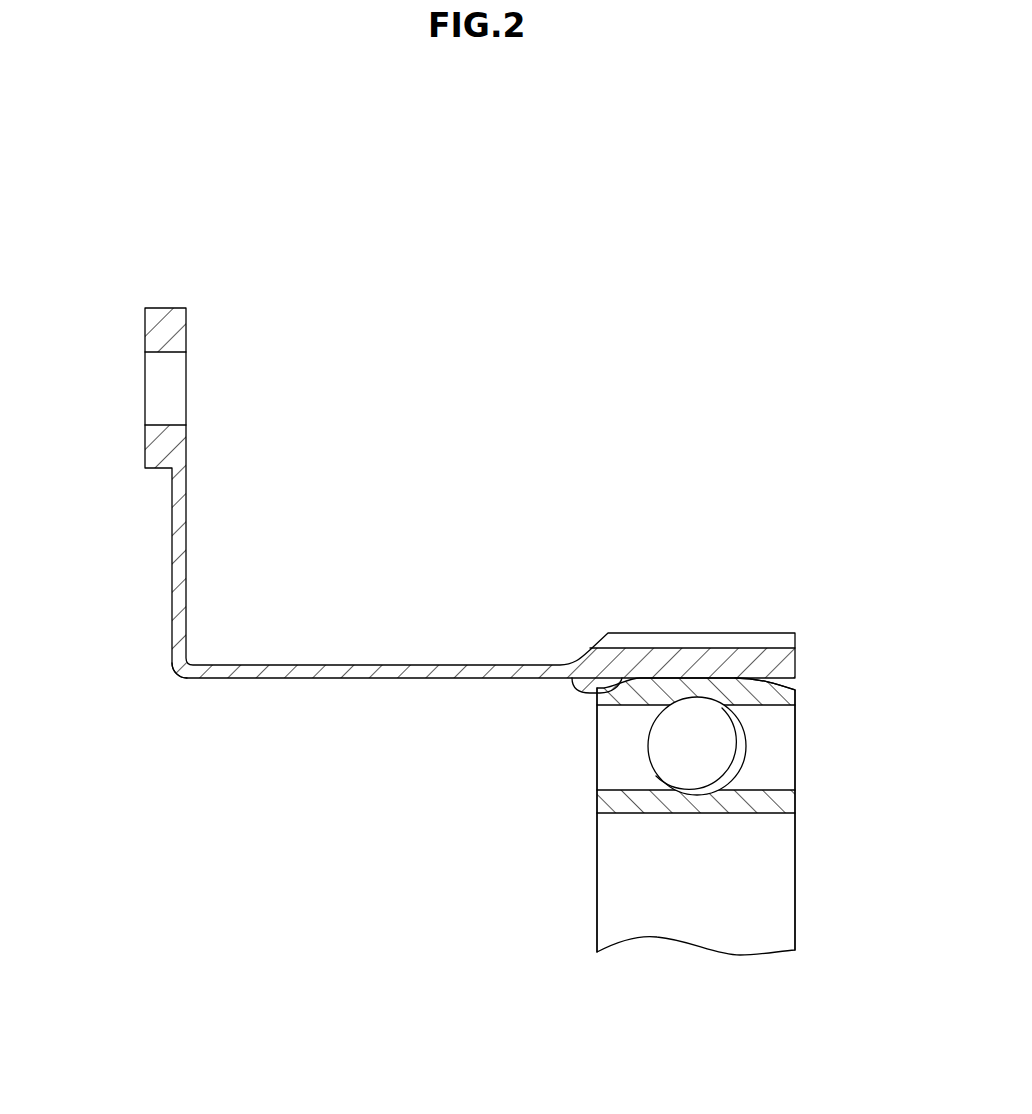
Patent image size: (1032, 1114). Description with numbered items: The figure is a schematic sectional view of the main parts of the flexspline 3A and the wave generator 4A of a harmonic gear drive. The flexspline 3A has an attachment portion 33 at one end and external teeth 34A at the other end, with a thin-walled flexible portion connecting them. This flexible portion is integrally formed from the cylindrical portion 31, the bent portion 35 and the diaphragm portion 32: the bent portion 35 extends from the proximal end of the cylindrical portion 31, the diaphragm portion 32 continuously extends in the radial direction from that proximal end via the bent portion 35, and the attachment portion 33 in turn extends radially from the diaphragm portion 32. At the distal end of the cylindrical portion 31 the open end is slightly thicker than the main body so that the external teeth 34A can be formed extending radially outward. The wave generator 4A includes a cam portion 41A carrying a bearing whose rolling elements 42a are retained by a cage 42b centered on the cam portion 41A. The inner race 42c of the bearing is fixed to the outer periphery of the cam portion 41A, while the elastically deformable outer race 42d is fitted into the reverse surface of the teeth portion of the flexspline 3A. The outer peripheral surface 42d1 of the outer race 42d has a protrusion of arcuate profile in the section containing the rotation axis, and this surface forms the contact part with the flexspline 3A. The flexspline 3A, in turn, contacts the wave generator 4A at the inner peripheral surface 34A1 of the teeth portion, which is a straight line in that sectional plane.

The flexspline 3A is at (345, 384).
The attachment portion 33 is at (145, 315).
The diaphragm portion 32 is at (184, 560).
The cylindrical portion 31 is at (298, 667).
The bent portion 35 is at (188, 678).
The external teeth 34A is at (712, 648).
The inner peripheral surface of the teeth portion 34A1 is at (576, 680).
The wave generator 4A is at (540, 907).
The cam portion 41A is at (790, 905).
The outer race 42d is at (795, 697).
The outer peripheral surface of the outer race 42d1 is at (787, 682).
The cage 42b is at (795, 748).
The inner race 42c is at (795, 797).
The rolling elements 42a is at (648, 746).